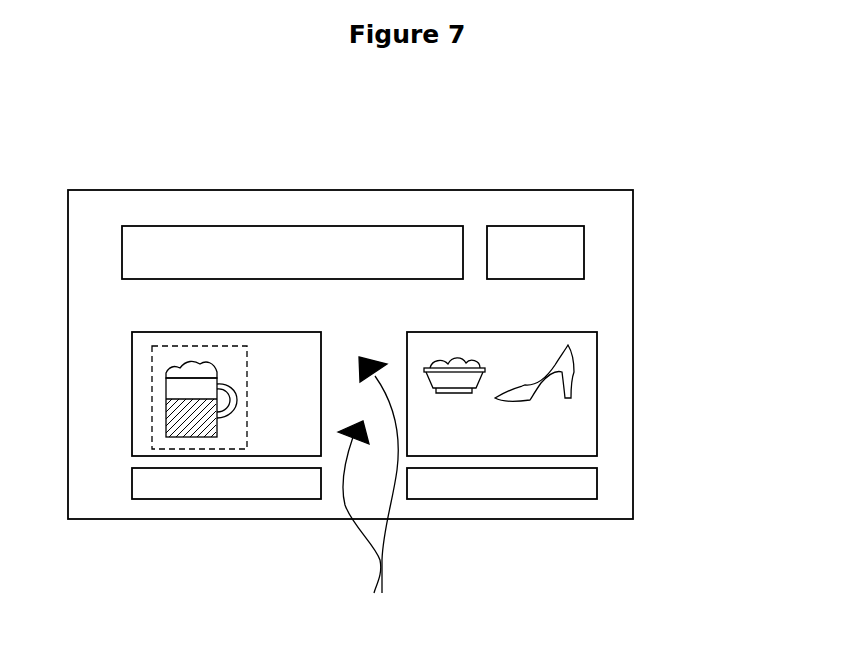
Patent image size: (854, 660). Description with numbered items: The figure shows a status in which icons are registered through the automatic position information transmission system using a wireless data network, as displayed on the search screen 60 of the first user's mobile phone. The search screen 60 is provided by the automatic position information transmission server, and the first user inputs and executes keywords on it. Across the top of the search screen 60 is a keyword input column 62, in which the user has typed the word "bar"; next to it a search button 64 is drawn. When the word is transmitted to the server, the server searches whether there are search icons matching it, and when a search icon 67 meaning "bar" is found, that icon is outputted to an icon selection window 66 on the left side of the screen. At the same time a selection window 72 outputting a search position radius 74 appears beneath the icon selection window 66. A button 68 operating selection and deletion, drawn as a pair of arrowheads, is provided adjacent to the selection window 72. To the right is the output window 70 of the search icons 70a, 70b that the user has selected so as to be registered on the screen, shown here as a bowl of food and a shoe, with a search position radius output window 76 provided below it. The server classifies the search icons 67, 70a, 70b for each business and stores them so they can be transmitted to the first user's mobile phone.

The search screen 60 is at (526, 172).
The keyword input column 62 is at (346, 238).
The search button 64 is at (575, 254).
The icon selection window 66 is at (215, 458).
The search icon 67 is at (166, 421).
The button 68 is at (368, 490).
The output window 70 is at (535, 457).
The search icon 70a is at (470, 362).
The search icon 70b is at (574, 372).
The selection window 72 is at (188, 492).
The search position radius 74 is at (145, 480).
The search position radius output window 76 is at (490, 492).